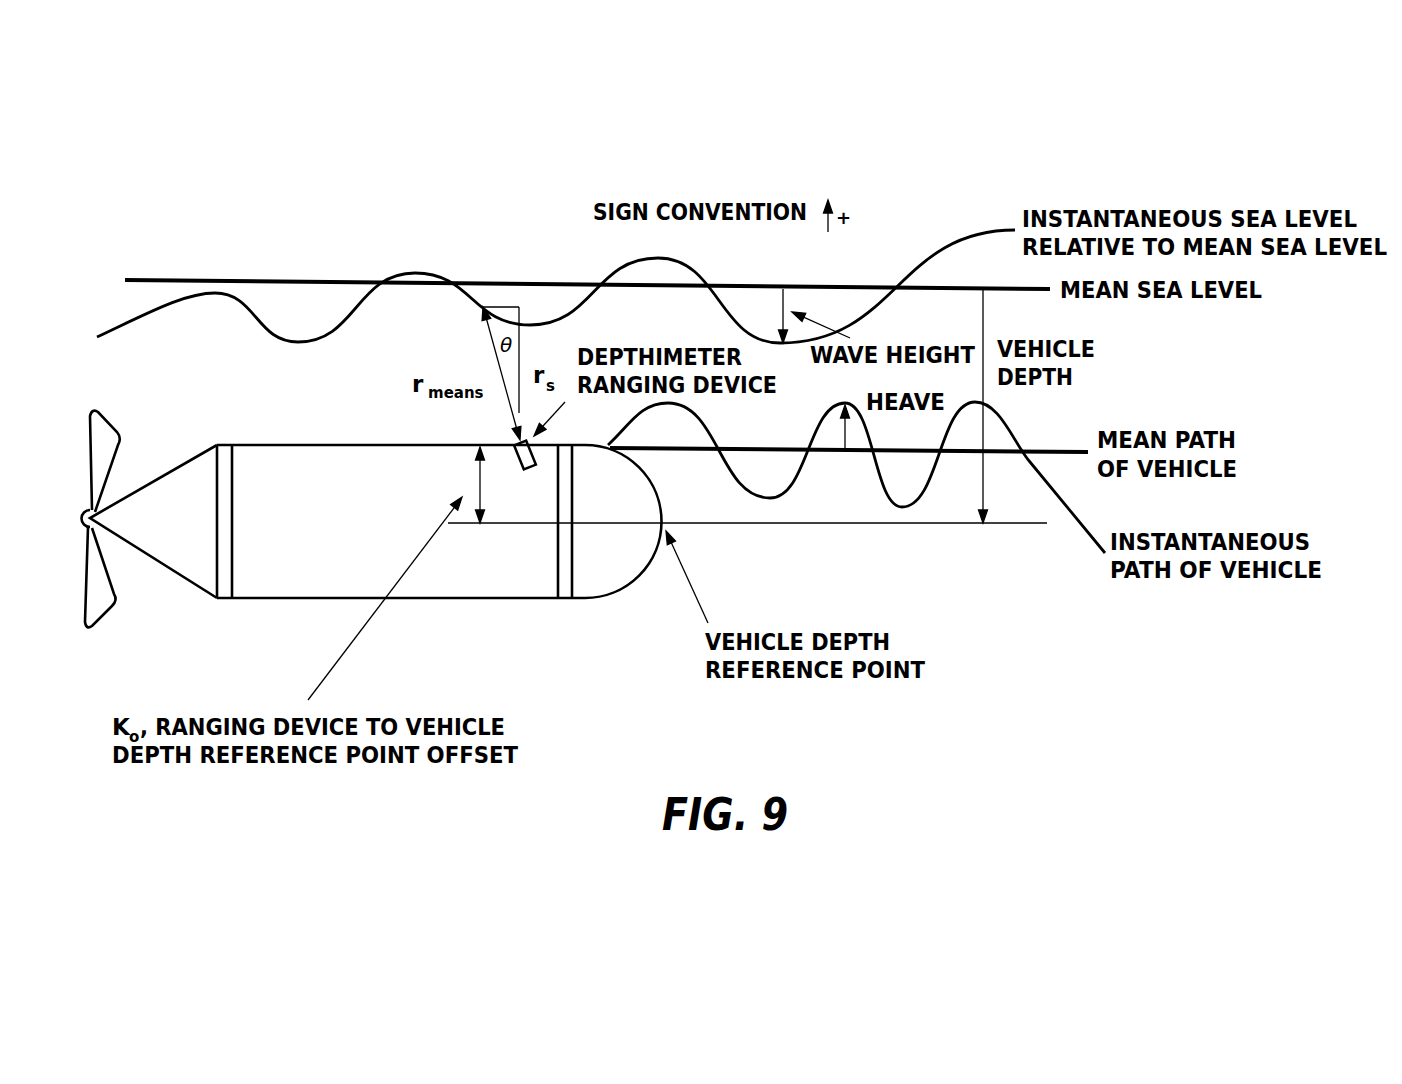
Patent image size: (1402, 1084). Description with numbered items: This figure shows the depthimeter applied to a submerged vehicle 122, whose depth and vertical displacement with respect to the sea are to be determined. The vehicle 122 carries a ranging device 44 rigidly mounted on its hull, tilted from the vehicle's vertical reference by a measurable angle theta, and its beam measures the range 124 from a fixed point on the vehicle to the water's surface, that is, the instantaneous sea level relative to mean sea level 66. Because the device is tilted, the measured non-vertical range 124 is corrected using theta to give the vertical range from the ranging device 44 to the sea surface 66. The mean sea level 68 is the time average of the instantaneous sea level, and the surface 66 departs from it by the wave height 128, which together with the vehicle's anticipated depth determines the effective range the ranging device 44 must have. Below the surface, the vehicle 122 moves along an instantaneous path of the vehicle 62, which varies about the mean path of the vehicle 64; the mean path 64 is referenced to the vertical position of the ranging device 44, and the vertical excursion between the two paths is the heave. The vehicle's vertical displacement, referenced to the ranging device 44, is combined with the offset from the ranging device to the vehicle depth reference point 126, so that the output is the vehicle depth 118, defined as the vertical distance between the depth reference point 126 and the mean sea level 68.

The mean sea level 68 is at (312, 280).
The instantaneous sea level relative to mean sea level 66 is at (938, 248).
The wave height 128 is at (783, 297).
The vehicle depth 118 is at (982, 315).
The measured range r_meas 124 is at (492, 345).
The ranging device 44 is at (525, 470).
The mean path of the vehicle 64 is at (1054, 450).
The instantaneous path of the vehicle 62 is at (1076, 513).
The vehicle depth reference point 126 is at (895, 524).
The sub-surface vehicle 122 is at (600, 602).